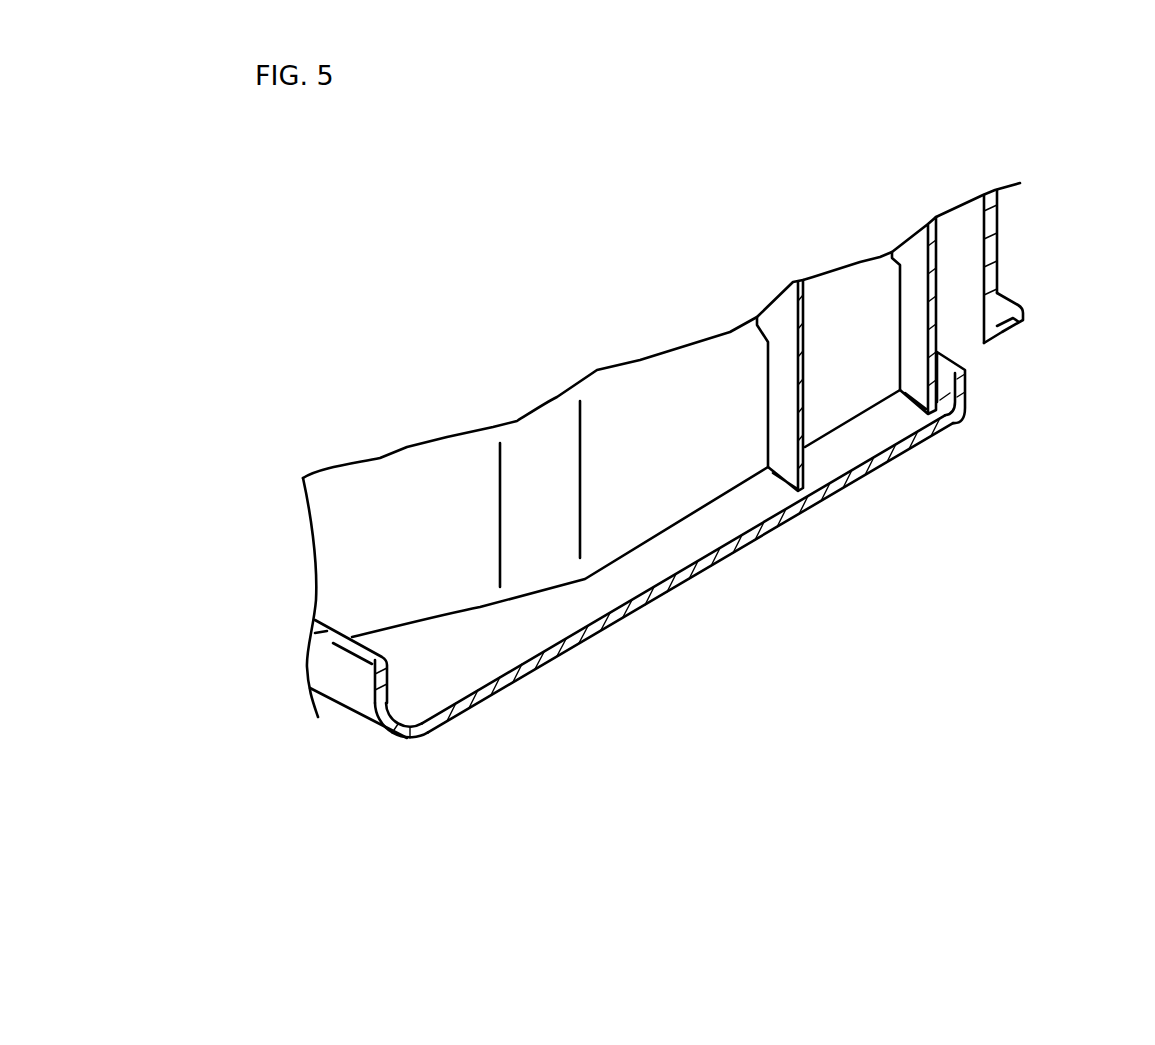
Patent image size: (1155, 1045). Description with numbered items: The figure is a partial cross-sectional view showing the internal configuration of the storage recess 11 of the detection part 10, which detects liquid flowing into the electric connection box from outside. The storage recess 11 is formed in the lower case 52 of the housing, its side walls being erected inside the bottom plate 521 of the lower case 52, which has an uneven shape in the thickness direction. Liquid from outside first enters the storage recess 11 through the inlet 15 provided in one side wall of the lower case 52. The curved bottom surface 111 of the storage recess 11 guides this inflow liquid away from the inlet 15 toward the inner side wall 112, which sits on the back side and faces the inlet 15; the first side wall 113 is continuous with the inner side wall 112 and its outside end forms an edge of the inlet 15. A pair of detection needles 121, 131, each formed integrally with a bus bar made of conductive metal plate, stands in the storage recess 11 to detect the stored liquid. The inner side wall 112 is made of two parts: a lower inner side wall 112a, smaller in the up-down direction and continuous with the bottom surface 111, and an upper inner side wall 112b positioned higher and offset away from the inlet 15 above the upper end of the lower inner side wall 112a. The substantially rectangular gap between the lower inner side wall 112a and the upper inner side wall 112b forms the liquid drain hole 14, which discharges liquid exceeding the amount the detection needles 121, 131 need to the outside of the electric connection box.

The detection part 10 is at (279, 545).
The storage recess 11 is at (747, 485).
The bottom surface 111 is at (573, 614).
The inner side wall 112 is at (1040, 367).
The lower inner side wall 112a is at (963, 395).
The upper inner side wall 112b is at (990, 237).
The first side wall 113 is at (625, 393).
The detection needle 121 is at (777, 313).
The detection needle 131 is at (915, 257).
The liquid drain hole 14 is at (962, 338).
The inlet 15 is at (321, 714).
The lower case 52 is at (360, 699).
The bottom plate 521 is at (705, 575).